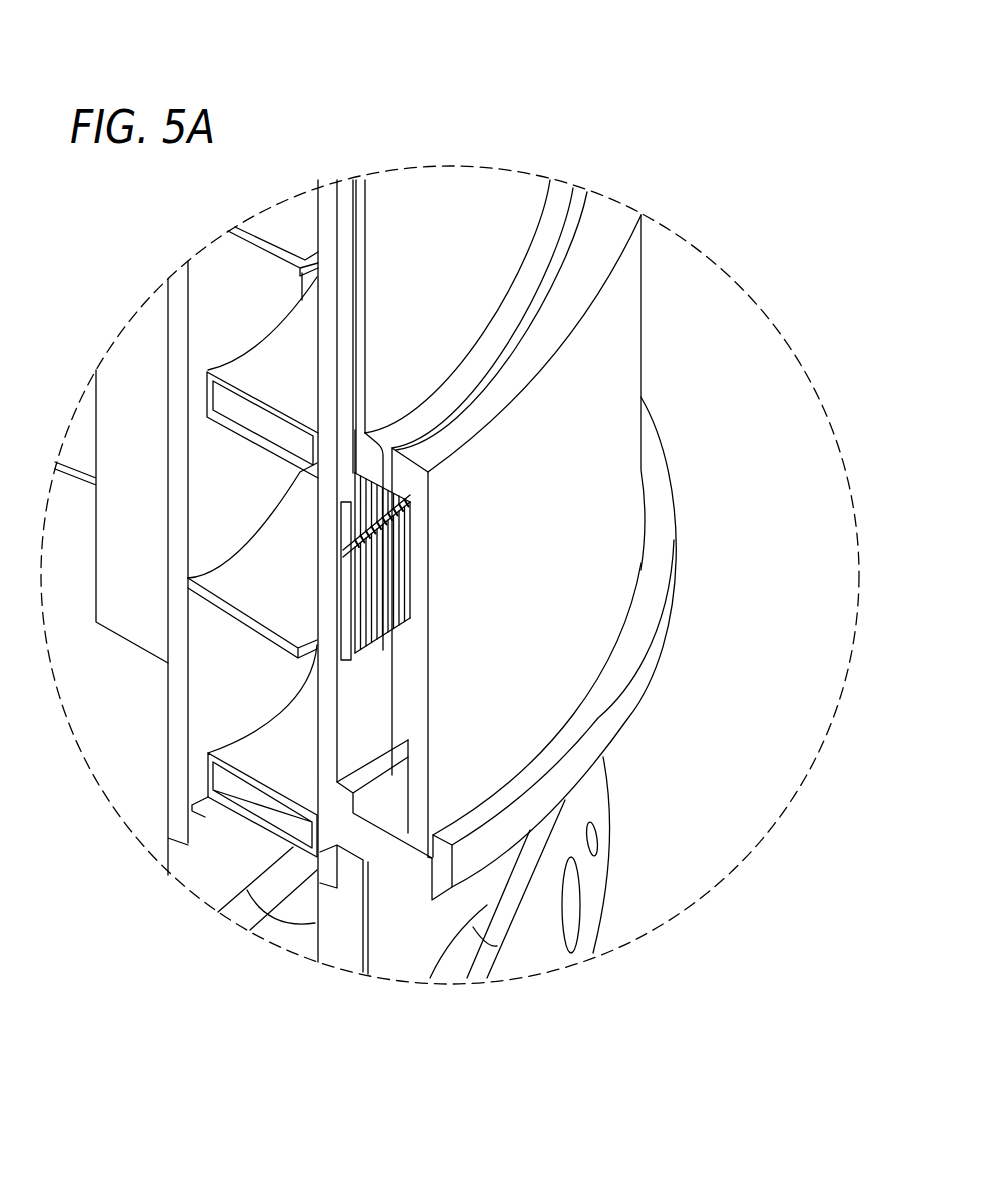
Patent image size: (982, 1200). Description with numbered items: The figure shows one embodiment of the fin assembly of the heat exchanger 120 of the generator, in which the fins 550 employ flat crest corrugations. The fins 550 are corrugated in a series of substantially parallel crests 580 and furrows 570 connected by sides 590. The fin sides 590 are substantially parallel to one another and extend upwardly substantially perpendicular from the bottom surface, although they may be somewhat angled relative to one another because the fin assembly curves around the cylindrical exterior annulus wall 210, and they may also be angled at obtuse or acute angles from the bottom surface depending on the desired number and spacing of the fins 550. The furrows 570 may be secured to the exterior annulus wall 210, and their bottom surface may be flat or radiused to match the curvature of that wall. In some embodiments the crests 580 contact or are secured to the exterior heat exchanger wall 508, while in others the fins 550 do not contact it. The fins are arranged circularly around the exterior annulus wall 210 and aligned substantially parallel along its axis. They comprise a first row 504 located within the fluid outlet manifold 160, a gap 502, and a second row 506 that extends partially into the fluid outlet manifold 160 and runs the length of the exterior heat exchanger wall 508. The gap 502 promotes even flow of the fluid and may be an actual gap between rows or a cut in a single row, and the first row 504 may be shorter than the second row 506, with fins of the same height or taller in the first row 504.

The heat exchanger 120 is at (465, 218).
The fluid outlet manifold 160 is at (428, 638).
The exterior annulus wall 210 is at (325, 708).
The gap 502 is at (343, 547).
The first row 504 is at (396, 652).
The second row 506 is at (337, 333).
The exterior heat exchanger wall 508 is at (370, 246).
The fins 550 is at (337, 610).
The furrows 570 is at (345, 550).
The crests 580 is at (371, 650).
The sides 590 is at (345, 568).